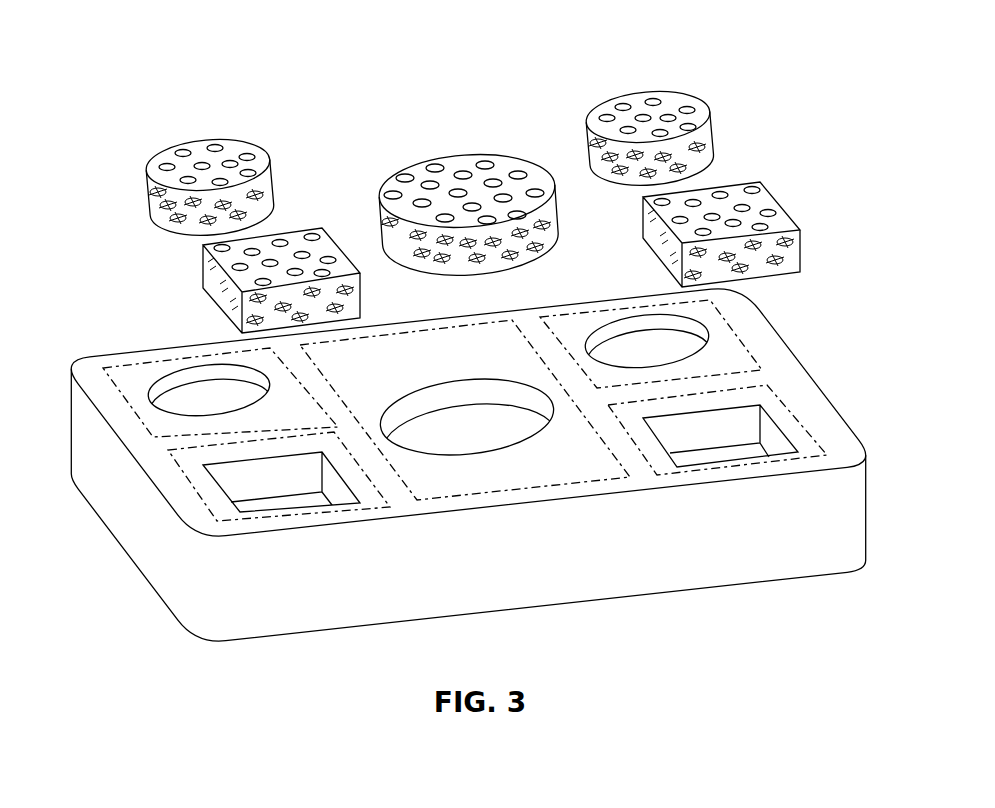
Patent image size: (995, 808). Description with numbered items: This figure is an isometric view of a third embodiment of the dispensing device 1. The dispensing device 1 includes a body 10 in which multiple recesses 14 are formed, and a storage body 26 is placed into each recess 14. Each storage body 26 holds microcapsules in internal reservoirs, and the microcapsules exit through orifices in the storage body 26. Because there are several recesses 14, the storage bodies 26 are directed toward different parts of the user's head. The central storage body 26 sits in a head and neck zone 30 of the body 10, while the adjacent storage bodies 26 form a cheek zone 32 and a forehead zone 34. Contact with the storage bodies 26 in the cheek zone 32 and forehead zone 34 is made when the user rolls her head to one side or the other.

The dispensing device 1 is at (120, 72).
The body 10 is at (688, 556).
The recess 14 is at (198, 382).
The storage body 26 is at (235, 150).
The head and neck zone 30 is at (595, 482).
The cheek zone 32 is at (197, 497).
The forehead zone 34 is at (123, 392).